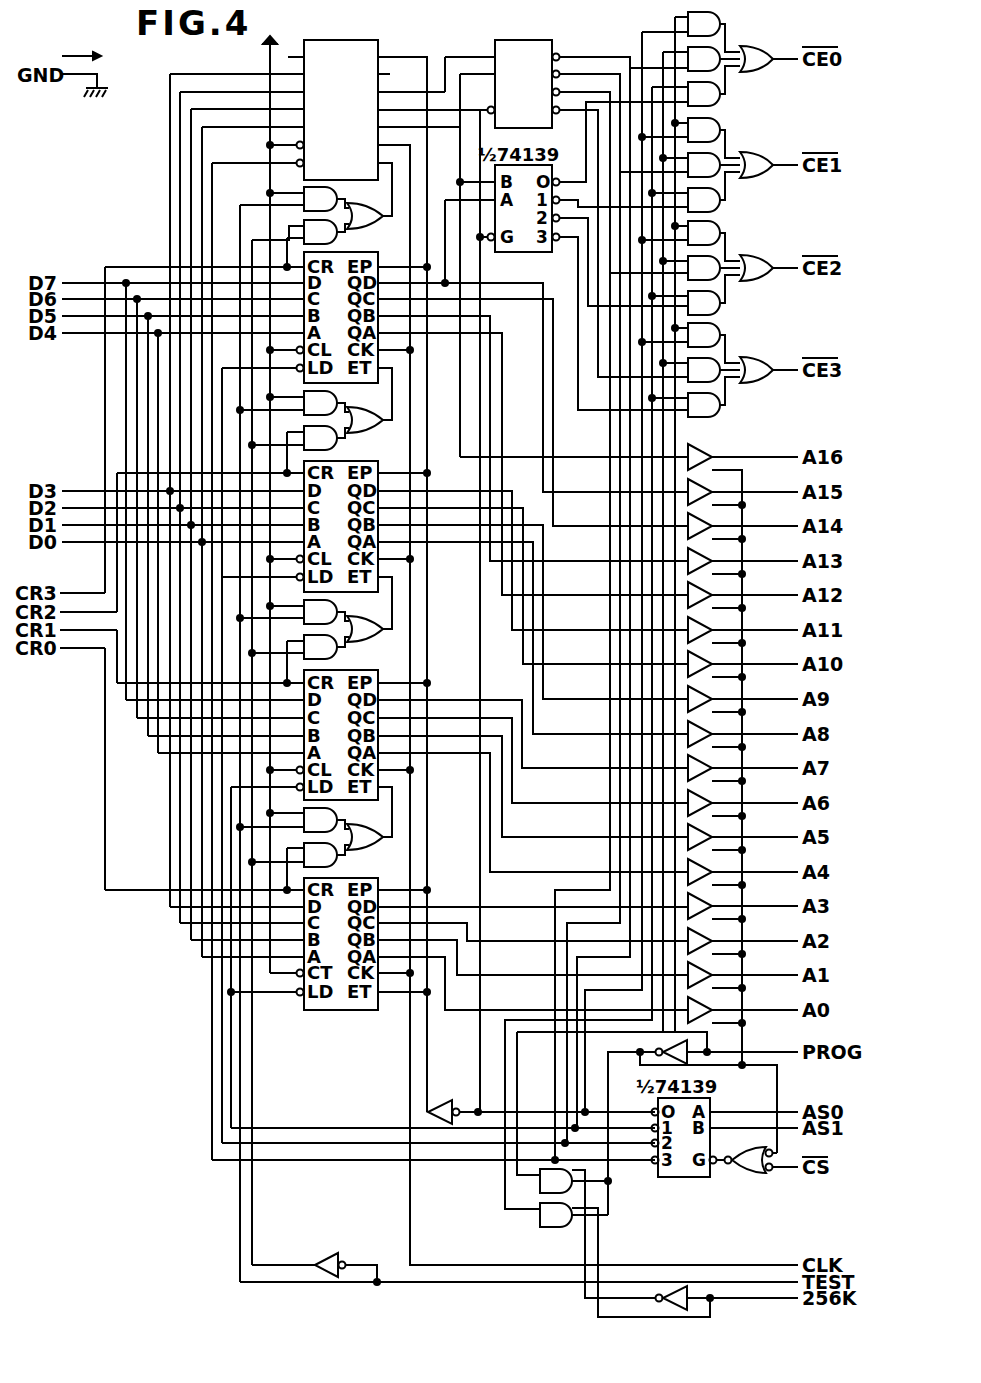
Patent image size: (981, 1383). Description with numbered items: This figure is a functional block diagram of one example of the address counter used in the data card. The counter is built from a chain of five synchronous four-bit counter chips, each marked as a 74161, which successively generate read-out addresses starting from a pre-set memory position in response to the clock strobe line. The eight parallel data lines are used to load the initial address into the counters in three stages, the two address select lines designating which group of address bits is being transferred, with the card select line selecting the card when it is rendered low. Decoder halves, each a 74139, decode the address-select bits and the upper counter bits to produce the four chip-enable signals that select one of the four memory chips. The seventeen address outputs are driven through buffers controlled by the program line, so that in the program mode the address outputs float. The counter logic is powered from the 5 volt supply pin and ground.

The synchronous 4-bit counter (5x 74161) 74161 is at (337, 99).
The dual 2-to-4 line decoder (1/2 74139) 74139 is at (518, 72).
The 5V supply 5 is at (64, 56).